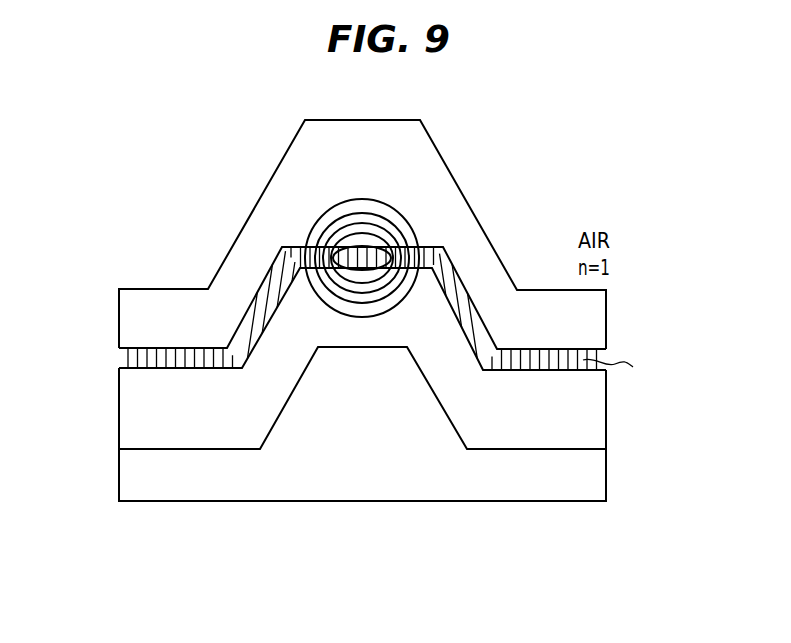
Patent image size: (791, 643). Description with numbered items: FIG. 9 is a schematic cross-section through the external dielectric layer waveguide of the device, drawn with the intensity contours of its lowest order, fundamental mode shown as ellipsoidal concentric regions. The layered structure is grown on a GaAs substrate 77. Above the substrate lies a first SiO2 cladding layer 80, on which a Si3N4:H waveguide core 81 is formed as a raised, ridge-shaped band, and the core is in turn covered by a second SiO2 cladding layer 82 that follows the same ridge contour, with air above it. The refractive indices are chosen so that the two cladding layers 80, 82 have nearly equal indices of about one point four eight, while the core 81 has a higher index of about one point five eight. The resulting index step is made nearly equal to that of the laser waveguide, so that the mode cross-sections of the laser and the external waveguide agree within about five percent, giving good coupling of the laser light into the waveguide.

The GaAs substrate 77 is at (127, 473).
The SiO2 cladding layer 80 is at (127, 407).
The Si3N4:H waveguide core 81 is at (125, 359).
The SiO2 cladding layer 82 is at (127, 313).